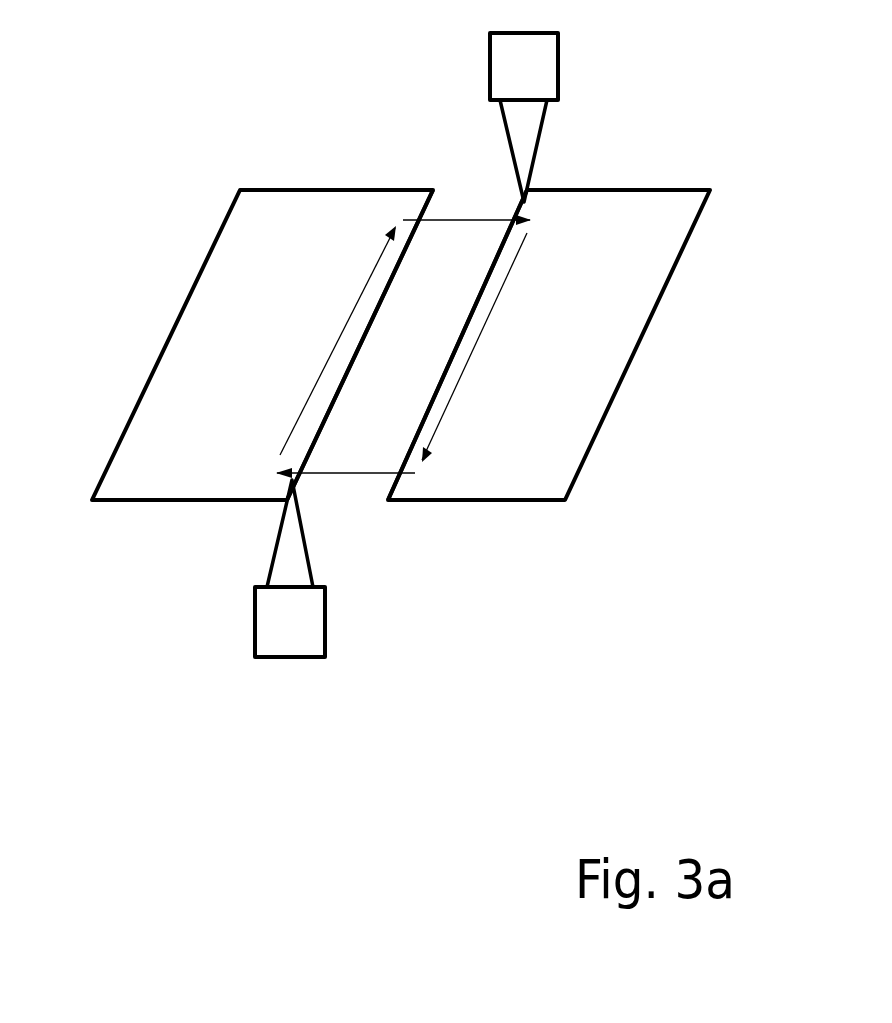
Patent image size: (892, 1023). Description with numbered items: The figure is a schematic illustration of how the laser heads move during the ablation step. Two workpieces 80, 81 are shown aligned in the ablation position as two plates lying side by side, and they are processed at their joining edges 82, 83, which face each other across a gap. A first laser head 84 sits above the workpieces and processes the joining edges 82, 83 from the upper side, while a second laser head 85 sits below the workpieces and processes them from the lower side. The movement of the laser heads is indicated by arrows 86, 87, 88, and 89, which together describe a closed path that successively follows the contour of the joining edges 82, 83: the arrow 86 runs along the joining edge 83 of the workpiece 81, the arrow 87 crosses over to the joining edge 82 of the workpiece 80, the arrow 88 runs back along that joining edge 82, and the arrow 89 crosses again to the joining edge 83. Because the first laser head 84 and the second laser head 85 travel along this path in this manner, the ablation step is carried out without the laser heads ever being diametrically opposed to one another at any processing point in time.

The workpiece 80 is at (177, 372).
The workpiece 81 is at (598, 382).
The joining edge 82 is at (330, 405).
The joining edge 83 is at (463, 333).
The first laser head 84 is at (558, 68).
The second laser head 85 is at (325, 630).
The arrow 86 is at (492, 303).
The arrow 87 is at (365, 473).
The arrow 88 is at (342, 335).
The arrow 89 is at (450, 220).